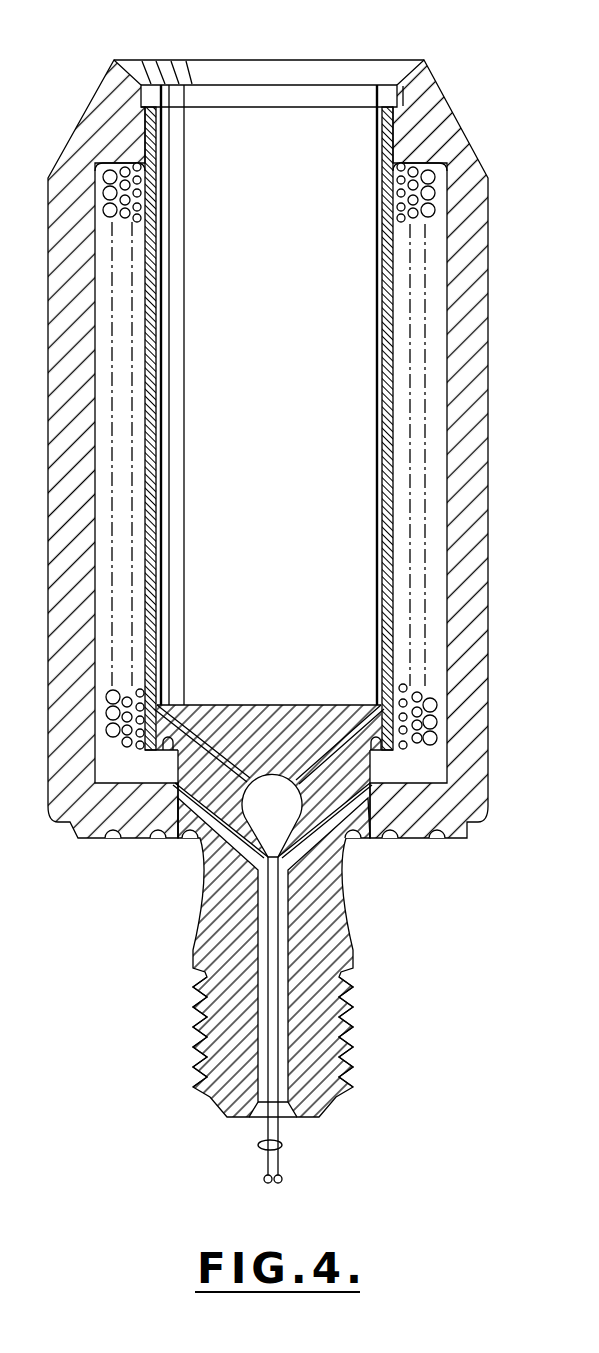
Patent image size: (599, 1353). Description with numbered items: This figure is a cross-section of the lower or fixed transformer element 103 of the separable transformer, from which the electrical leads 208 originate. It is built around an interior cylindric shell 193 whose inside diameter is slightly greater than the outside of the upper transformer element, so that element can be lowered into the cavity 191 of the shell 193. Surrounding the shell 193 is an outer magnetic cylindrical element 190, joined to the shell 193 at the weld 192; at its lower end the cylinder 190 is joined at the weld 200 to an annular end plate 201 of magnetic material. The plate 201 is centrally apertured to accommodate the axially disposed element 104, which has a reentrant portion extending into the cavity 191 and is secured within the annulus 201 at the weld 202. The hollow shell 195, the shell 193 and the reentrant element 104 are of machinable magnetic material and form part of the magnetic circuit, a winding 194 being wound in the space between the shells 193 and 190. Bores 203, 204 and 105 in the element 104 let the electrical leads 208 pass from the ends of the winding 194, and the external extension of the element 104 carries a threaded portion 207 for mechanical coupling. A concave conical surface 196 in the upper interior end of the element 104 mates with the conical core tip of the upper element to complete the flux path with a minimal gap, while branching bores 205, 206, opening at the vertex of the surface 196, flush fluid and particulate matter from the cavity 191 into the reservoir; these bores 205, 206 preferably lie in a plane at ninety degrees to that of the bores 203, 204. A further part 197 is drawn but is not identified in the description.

The fixed transformer element 103 is at (446, 69).
The outer magnetic cylindrical element 190 is at (116, 86).
The cavity 191 is at (290, 118).
The weld 192 is at (166, 118).
The interior cylindric shell 193 is at (162, 177).
The transformer winding 194 is at (124, 347).
The hollow shell 195 is at (128, 470).
The concave conical surface 196 is at (312, 713).
The inner wall 197 is at (148, 683).
The bore 203 is at (212, 752).
The weld 200 is at (86, 840).
The annular end plate 201 is at (138, 845).
The weld 202 is at (176, 848).
The bore 204 is at (320, 843).
The branching bore 205 is at (194, 928).
The branching bore 206 is at (332, 896).
The axially disposed element 104 is at (350, 982).
The bore 105 is at (292, 1040).
The threaded portion 207 is at (210, 1072).
The electrical leads 208 is at (281, 1145).